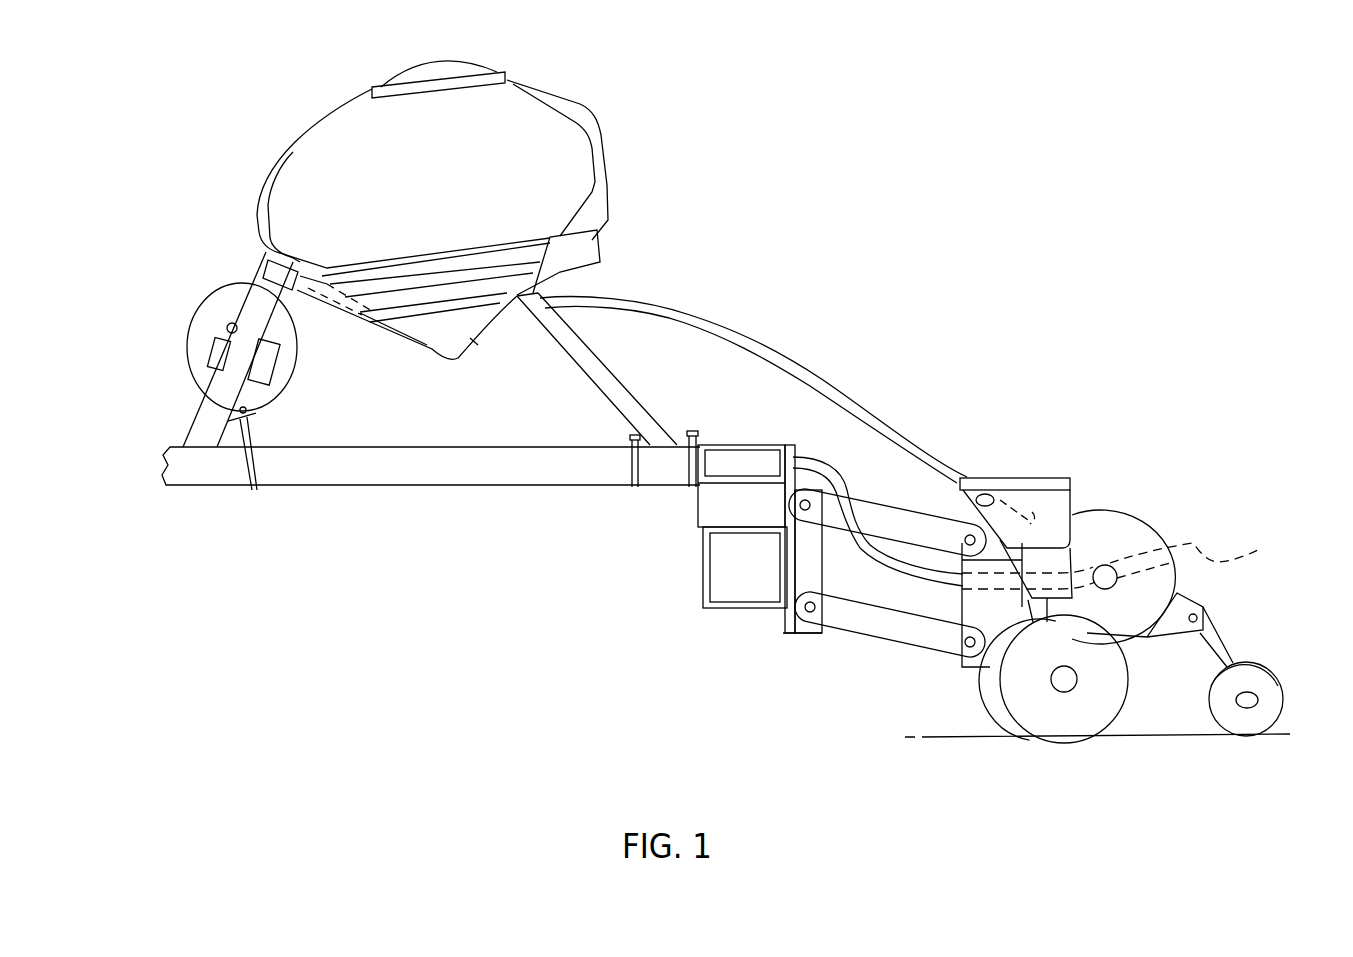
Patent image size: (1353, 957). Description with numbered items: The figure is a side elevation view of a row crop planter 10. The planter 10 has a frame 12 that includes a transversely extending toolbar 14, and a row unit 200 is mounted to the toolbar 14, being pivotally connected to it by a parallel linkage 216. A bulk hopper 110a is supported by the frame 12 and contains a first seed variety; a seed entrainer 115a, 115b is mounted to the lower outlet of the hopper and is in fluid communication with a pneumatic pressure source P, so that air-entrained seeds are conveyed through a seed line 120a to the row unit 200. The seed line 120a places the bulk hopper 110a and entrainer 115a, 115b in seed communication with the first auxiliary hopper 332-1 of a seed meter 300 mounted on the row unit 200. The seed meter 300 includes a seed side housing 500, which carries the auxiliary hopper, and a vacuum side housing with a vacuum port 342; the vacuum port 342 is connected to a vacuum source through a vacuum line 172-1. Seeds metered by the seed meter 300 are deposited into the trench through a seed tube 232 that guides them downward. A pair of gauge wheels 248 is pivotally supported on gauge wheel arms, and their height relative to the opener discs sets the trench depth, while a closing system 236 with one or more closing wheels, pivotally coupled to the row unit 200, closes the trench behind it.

The planter 10 is at (764, 206).
The first bulk hopper 110a is at (462, 191).
The first seed entrainer 115a is at (470, 357).
The second seed entrainer 115b is at (407, 317).
The pneumatic pressure source P is at (212, 316).
The seed line 120a is at (719, 319).
The frame 12 is at (510, 473).
The toolbar 14 is at (703, 567).
The vacuum line 172-1 is at (833, 462).
The row unit 200 is at (1273, 413).
The parallel linkage 216 is at (883, 648).
The seed tube 232 is at (1027, 604).
The seed meter 300 is at (1095, 490).
The first auxiliary hopper 332-1 is at (1043, 495).
The seed side housing 500 is at (1128, 527).
The vacuum port 342 is at (1256, 552).
The closing system 236 is at (1250, 672).
The gauge wheels 248 is at (1015, 689).